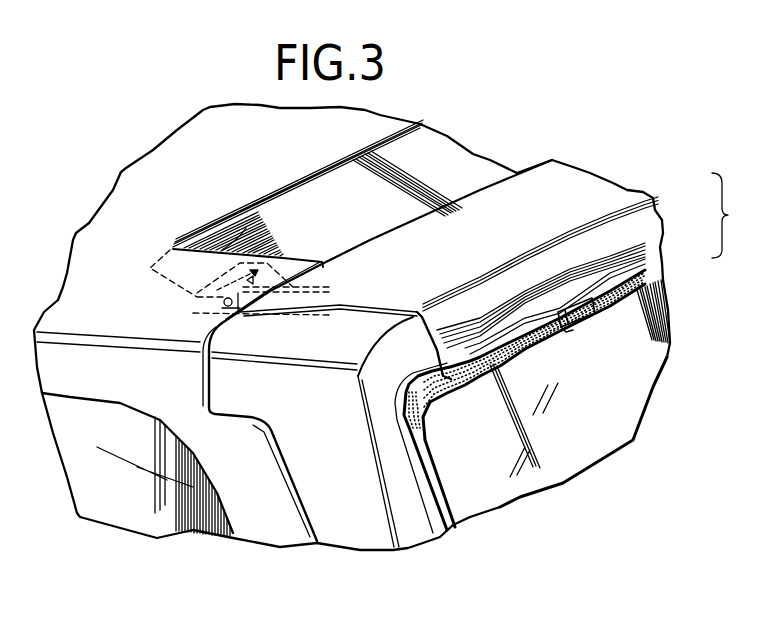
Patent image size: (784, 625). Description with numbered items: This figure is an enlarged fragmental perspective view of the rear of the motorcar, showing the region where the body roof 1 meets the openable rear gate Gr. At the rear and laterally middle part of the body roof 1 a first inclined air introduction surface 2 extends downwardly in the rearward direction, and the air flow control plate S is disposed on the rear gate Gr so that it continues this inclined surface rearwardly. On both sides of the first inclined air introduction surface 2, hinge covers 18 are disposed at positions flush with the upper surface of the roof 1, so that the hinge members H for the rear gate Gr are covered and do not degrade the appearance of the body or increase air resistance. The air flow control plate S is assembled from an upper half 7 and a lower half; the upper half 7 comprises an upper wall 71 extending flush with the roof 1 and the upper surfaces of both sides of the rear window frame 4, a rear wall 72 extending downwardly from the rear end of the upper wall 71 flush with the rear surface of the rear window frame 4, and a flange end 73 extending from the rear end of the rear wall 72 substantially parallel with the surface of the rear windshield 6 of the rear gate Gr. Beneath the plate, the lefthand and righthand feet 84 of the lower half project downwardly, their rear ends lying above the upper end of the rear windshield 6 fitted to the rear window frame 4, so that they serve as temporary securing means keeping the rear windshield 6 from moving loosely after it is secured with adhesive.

The body roof 1 is at (189, 189).
The first inclined air introduction surface 2 is at (318, 229).
The hinge member H is at (297, 266).
The hinge cover 18 is at (230, 238).
The air flow control plate S is at (573, 172).
The rear window frame 4 is at (420, 548).
The rear windshield 6 is at (637, 411).
The upper half 7 is at (730, 215).
The upper wall 71 is at (623, 195).
The rear wall 72 is at (643, 228).
The flange end 73 is at (660, 262).
The lefthand and righthand feet 84 is at (570, 330).
The rear gate Gr is at (666, 308).